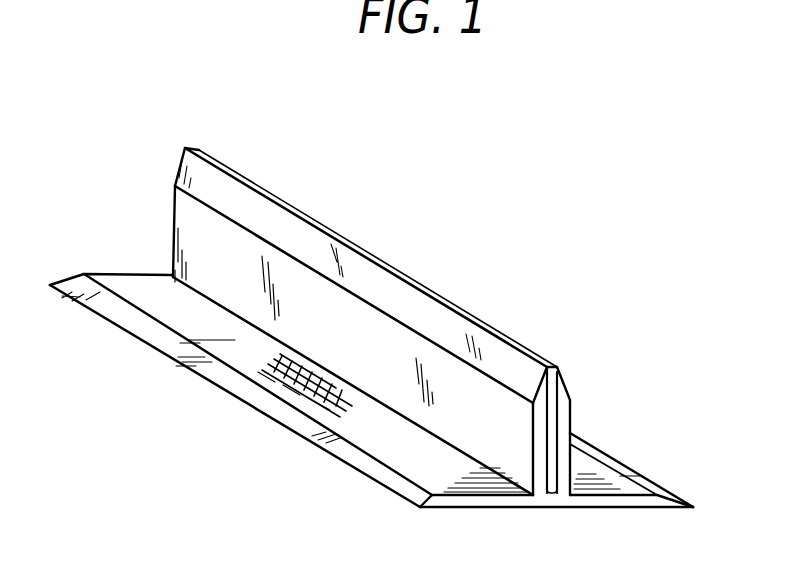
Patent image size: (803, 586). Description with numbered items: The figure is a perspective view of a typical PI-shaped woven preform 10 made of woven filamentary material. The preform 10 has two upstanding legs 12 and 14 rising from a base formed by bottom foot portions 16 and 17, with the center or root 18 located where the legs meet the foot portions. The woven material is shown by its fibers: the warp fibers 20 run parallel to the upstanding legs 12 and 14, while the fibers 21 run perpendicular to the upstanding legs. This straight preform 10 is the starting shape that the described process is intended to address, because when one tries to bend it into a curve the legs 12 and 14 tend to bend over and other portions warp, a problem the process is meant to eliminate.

The PI woven preform 10 is at (503, 212).
The upstanding leg 12 is at (450, 323).
The upstanding leg 14 is at (568, 383).
The bottom foot portion 16 is at (420, 507).
The bottom foot portion 17 is at (637, 508).
The center or root 18 is at (553, 508).
The warp fibers 20 is at (317, 415).
The fibers 21 is at (250, 377).